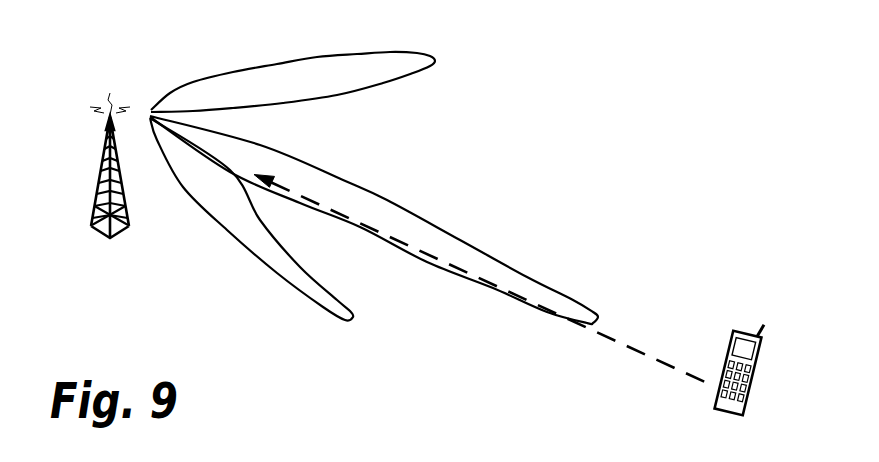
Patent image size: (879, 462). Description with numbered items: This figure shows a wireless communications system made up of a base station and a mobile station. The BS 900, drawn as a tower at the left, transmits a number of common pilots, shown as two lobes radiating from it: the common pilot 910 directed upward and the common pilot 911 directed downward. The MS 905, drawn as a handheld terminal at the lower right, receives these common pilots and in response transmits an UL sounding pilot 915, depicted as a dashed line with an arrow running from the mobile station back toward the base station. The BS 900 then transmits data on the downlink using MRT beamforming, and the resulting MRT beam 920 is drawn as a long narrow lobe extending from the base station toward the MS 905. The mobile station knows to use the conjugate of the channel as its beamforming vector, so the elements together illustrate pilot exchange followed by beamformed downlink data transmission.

The BS 900 is at (100, 190).
The MS 905 is at (757, 380).
The common pilot 910 is at (276, 65).
The common pilot 911 is at (233, 222).
The UL sounding pilot 915 is at (622, 344).
The MRT beam 920 is at (369, 190).